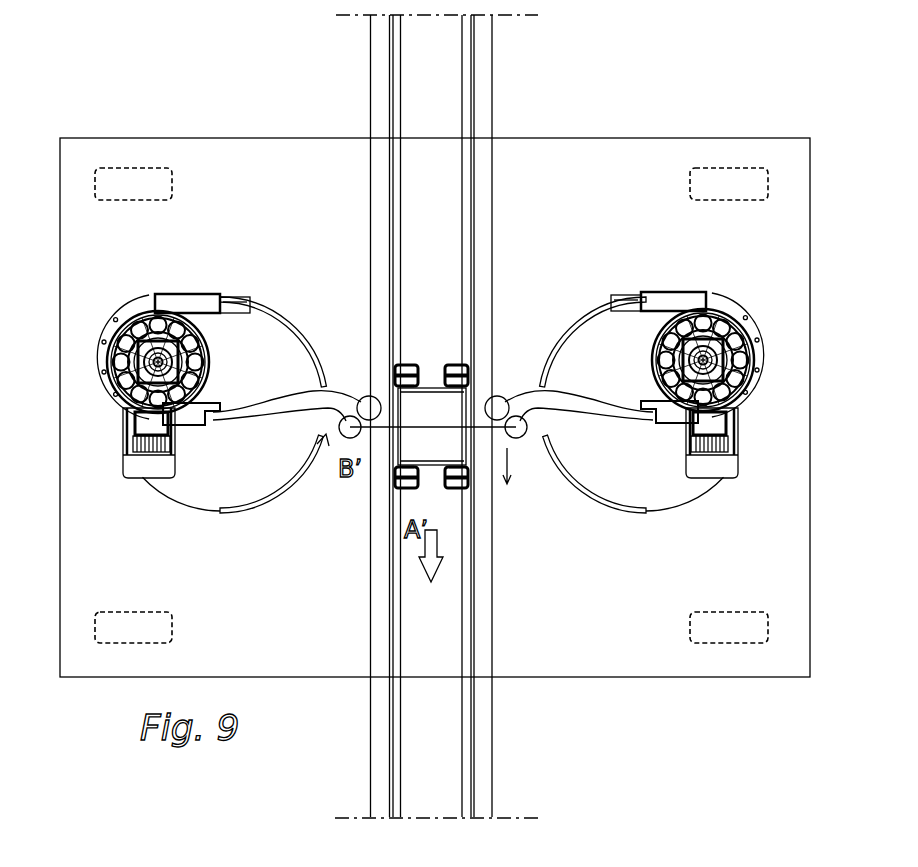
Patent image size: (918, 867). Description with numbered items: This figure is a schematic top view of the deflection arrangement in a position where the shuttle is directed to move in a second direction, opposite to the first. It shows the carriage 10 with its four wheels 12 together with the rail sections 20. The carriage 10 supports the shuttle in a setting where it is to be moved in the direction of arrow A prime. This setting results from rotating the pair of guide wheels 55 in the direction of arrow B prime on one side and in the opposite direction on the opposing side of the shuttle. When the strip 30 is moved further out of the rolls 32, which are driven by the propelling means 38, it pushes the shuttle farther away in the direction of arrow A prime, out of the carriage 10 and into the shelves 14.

The carriage 10 is at (556, 150).
The wheels 12 is at (735, 170).
The shelves 14 is at (385, 106).
The rail sections 20 is at (484, 152).
The strip 30 is at (565, 390).
The rolls 32 is at (213, 333).
The propelling means 38 is at (150, 458).
The guide wheels 55 is at (366, 396).